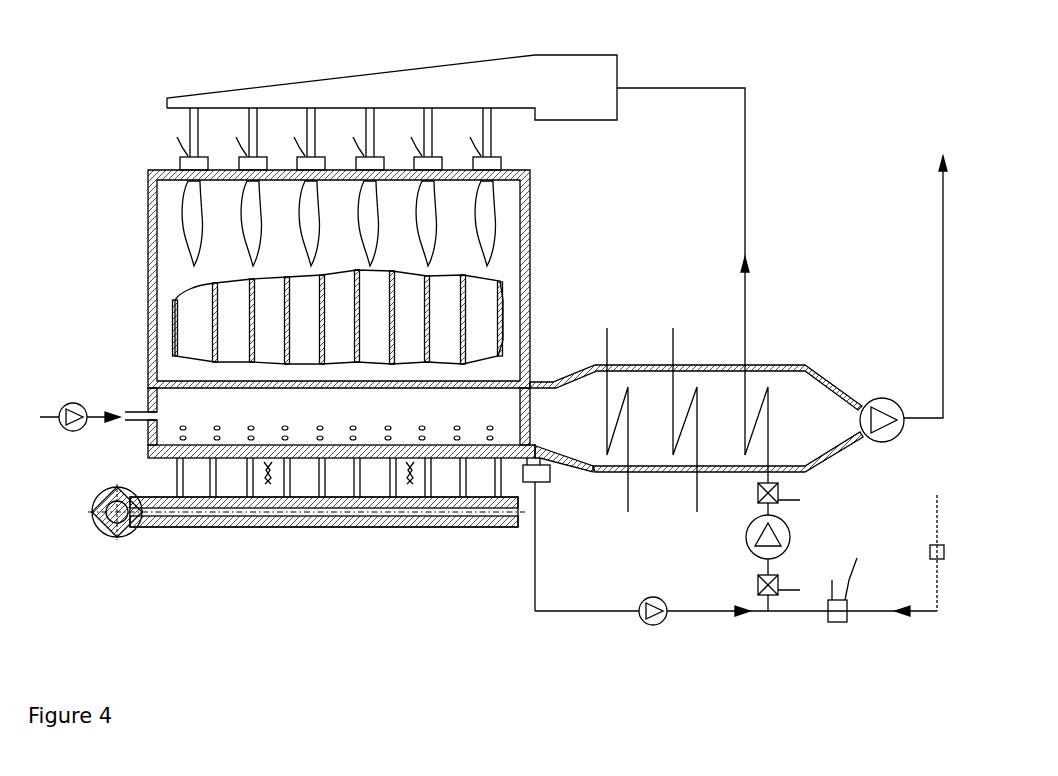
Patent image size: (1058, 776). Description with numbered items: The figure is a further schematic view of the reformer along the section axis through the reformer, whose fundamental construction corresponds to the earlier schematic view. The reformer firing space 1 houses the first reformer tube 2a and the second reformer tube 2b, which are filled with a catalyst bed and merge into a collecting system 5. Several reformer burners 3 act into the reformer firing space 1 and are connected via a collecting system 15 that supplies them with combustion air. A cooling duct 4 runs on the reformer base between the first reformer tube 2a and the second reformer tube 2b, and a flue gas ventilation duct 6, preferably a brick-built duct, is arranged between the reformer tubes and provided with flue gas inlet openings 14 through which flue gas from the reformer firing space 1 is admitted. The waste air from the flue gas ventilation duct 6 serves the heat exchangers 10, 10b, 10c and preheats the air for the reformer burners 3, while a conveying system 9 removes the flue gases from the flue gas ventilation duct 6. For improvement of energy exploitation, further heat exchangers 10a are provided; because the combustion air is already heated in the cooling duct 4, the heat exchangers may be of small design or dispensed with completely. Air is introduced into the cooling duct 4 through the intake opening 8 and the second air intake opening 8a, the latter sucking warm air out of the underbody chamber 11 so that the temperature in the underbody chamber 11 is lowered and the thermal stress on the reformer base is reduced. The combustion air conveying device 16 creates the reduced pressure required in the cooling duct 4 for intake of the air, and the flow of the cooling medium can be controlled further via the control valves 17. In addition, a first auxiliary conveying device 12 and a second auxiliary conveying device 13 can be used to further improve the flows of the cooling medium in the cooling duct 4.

The reformer firing space 1 is at (513, 265).
The first reformer tube 2a is at (392, 317).
The second reformer tube 2b is at (500, 300).
The reformer burner 3 is at (501, 165).
The cooling duct 4 is at (312, 463).
The collecting system 5 is at (98, 527).
The flue gas ventilation duct 6 is at (552, 423).
The intake opening 8 is at (127, 412).
The second air intake opening 8a is at (403, 476).
The conveying system 9 is at (878, 395).
The heat exchanger 10 is at (775, 450).
The further heat exchanger 10a is at (778, 485).
The heat exchanger 10b is at (607, 357).
The heat exchanger 10c is at (676, 365).
The underbody chamber 11 is at (297, 488).
The first auxiliary conveying device 12 is at (647, 597).
The second auxiliary conveying device 13 is at (68, 402).
The flue gas inlet openings 14 is at (185, 447).
The collecting system 15 is at (380, 73).
The combustion air conveying device 16 is at (753, 537).
The control valves 17 is at (140, 420).